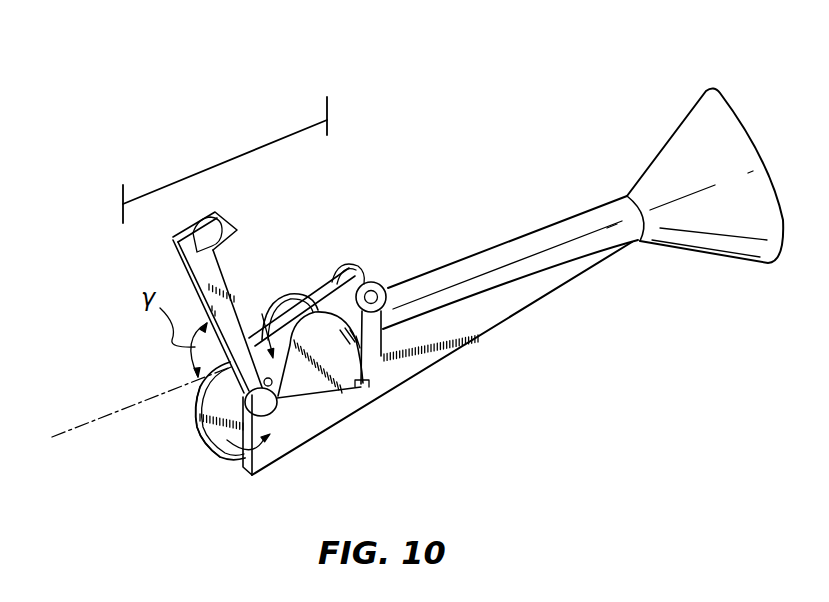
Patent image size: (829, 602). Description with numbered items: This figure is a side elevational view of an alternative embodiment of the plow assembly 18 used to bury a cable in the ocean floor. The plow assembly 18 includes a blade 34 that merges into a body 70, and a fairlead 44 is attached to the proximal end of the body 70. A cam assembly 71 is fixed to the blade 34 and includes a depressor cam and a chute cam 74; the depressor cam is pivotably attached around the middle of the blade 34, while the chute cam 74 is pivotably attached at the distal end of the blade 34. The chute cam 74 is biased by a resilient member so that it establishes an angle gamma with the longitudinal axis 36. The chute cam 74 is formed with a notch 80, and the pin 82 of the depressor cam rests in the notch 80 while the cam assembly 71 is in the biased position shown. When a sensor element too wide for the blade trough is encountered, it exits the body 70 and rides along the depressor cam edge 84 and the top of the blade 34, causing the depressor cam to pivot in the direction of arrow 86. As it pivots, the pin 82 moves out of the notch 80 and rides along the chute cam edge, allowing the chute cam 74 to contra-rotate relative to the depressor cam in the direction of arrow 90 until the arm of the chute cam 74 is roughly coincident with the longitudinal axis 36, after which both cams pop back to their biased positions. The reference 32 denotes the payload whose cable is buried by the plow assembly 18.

The plow assembly 18 is at (505, 395).
The base 32 is at (218, 450).
The blade 34 is at (412, 378).
The longitudinal axis 36 is at (111, 413).
The fairlead 44 is at (722, 93).
The body 70 is at (460, 259).
The cam assembly 71 is at (227, 158).
The chute cam 74 is at (196, 421).
The notch 80 is at (282, 307).
The pin 82 is at (302, 400).
The depressor cam edge 84 is at (202, 441).
The arrow 86 is at (292, 242).
The arrow 90 is at (279, 448).